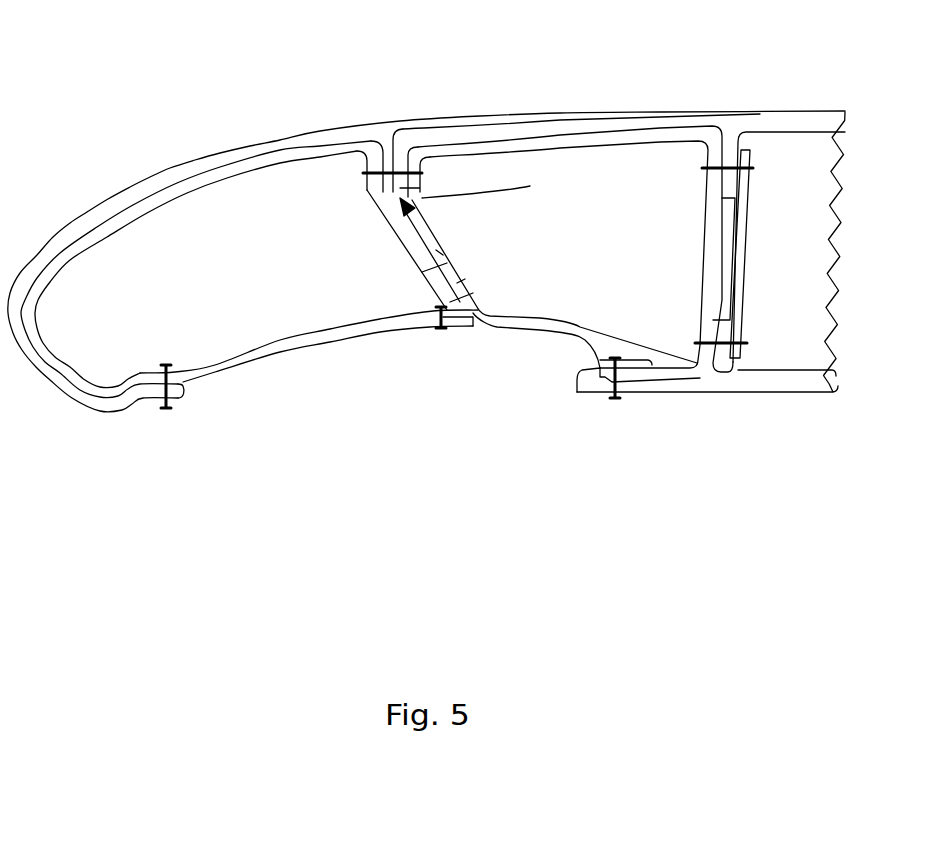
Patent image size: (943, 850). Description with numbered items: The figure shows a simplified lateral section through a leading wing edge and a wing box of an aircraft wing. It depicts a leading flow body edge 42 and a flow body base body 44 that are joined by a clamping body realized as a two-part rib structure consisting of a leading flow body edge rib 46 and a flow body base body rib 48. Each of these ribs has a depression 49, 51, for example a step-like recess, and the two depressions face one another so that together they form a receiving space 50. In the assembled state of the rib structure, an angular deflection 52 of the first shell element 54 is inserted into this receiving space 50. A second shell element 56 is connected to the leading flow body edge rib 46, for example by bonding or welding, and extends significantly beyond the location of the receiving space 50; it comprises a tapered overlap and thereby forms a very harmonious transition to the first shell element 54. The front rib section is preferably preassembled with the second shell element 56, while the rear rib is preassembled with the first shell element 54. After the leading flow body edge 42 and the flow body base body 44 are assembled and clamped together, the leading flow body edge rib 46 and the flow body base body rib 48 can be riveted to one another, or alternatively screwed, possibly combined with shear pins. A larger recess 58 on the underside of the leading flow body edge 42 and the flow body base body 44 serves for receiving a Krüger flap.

The leading flow body edge 42 is at (206, 109).
The flow body base body 44 is at (786, 98).
The leading flow body edge rib 46 is at (396, 221).
The flow body base body rib 48 is at (462, 274).
The depression 49 is at (366, 191).
The receiving space 50 is at (420, 230).
The depression 51 is at (530, 186).
The angular deflection 52 is at (422, 186).
The first shell element 54 is at (587, 125).
The second shell element 56 is at (131, 191).
The recess 58 is at (406, 357).